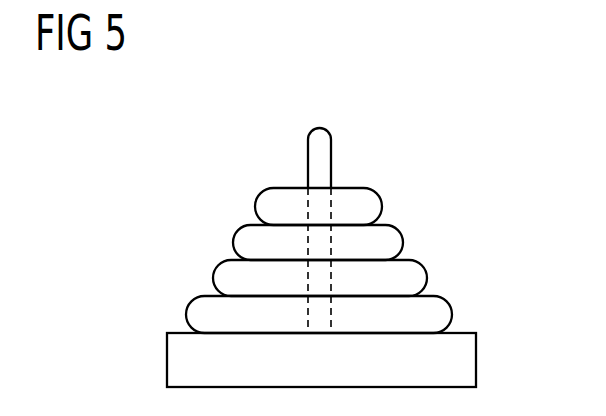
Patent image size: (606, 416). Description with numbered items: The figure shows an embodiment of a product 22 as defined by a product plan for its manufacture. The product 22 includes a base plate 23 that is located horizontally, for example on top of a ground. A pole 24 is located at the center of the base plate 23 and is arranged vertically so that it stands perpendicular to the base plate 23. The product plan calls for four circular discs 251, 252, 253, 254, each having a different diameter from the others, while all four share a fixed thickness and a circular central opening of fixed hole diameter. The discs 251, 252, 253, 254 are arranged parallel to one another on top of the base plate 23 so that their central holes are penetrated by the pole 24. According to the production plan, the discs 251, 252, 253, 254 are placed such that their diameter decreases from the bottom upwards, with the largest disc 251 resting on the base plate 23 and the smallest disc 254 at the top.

The product 22 is at (208, 160).
The base plate 23 is at (476, 372).
The pole 24 is at (331, 152).
The first circular disc 251 is at (452, 313).
The second circular disc 252 is at (427, 277).
The third circular disc 253 is at (403, 241).
The fourth circular disc 254 is at (383, 200).